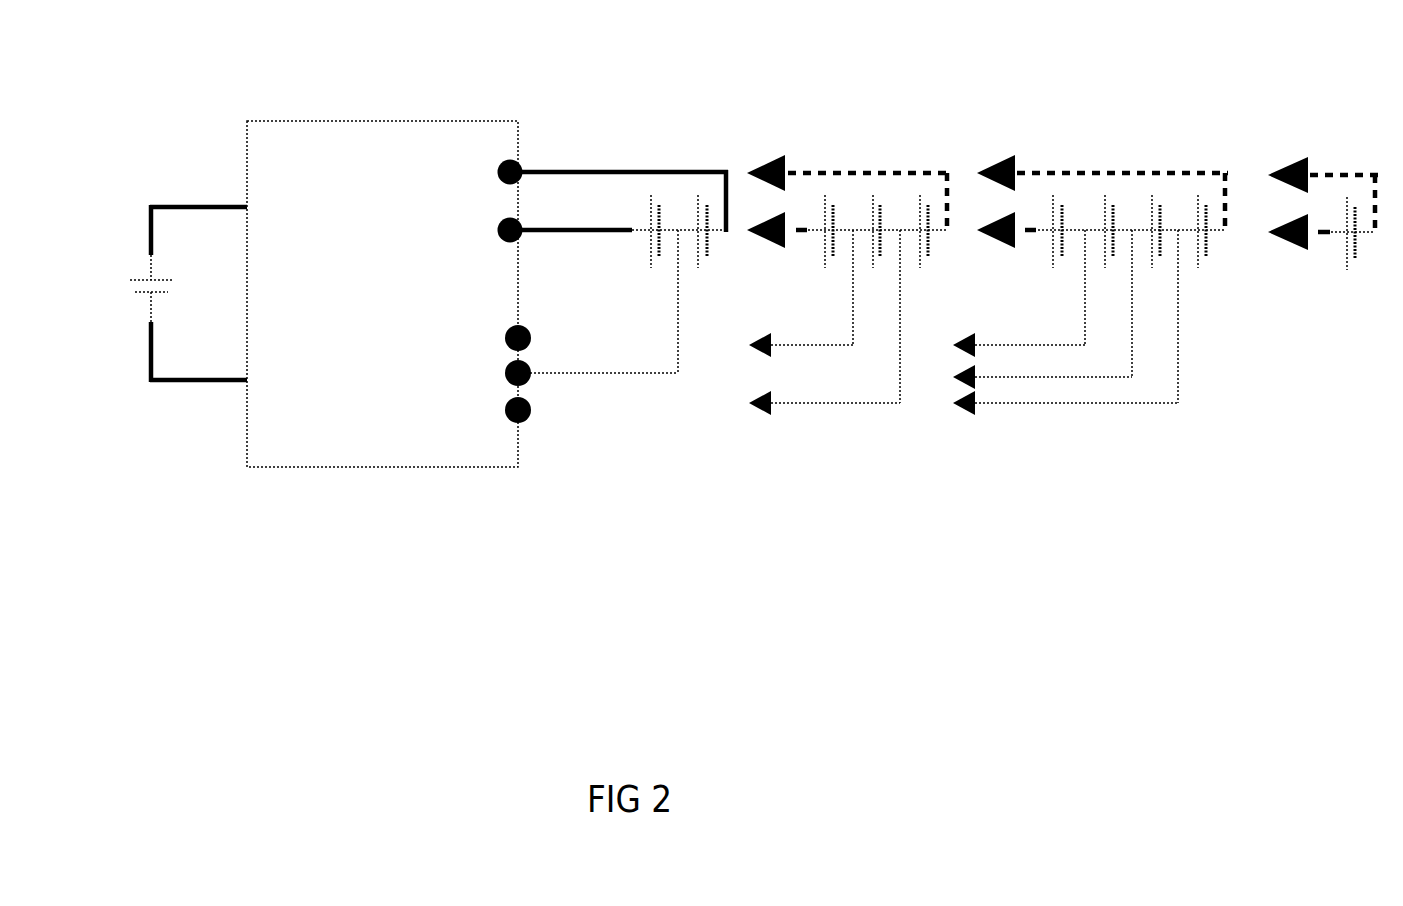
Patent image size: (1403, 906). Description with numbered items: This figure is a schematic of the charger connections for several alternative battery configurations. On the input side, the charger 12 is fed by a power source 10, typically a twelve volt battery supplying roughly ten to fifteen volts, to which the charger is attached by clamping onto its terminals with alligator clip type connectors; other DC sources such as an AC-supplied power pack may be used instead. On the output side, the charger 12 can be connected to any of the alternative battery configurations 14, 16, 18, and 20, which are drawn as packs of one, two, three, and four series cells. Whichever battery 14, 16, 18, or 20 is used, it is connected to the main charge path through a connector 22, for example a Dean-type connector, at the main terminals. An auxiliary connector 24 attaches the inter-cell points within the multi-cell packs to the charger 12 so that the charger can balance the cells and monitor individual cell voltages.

The power source 10 is at (197, 205).
The charger 12 is at (366, 156).
The connector 22 is at (514, 158).
The auxiliary connector 24 is at (528, 420).
The battery configuration 16 is at (623, 205).
The battery configuration 18 is at (848, 225).
The battery configuration 20 is at (1090, 225).
The battery configuration 14 is at (1323, 150).